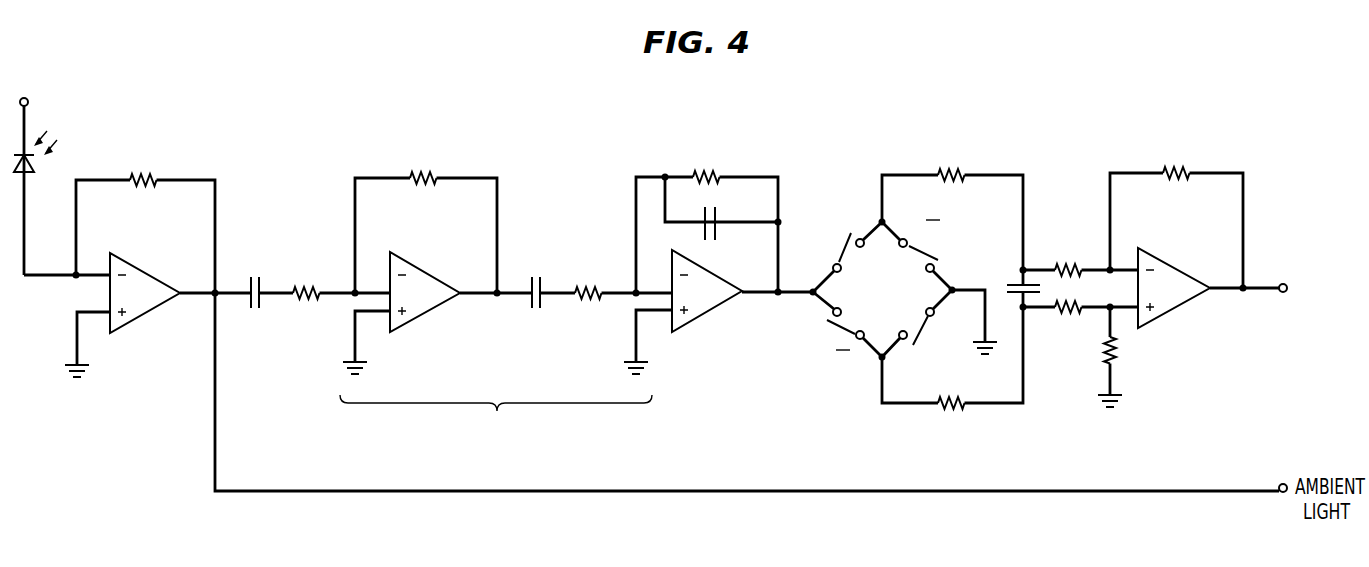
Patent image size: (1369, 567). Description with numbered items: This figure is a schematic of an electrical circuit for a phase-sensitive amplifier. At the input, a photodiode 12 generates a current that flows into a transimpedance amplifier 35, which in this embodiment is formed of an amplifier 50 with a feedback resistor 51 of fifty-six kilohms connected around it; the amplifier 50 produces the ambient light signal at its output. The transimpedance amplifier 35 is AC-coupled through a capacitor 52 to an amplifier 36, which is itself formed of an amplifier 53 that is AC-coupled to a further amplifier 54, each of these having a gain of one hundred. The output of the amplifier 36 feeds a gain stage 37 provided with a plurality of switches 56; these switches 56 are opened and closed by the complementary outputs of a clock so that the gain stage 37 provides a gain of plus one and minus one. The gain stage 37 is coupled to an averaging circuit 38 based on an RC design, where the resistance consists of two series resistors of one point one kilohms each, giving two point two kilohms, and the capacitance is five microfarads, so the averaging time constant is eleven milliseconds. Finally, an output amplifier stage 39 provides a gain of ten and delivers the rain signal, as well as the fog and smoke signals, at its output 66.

The photodiode 12 is at (31, 170).
The transimpedance amplifier 35 is at (137, 294).
The amplifier 36 is at (525, 293).
The gain stage 37 is at (906, 292).
The averaging circuit 38 is at (1069, 356).
The output amplifier stage 39 is at (1170, 326).
The amplifier 50 is at (148, 313).
The feedback resistor 51 is at (148, 185).
The capacitor 52 is at (259, 298).
The amplifier 53 is at (428, 313).
The further amplifier 54 is at (711, 313).
The switches 56 is at (846, 274).
The output 66 is at (1281, 285).